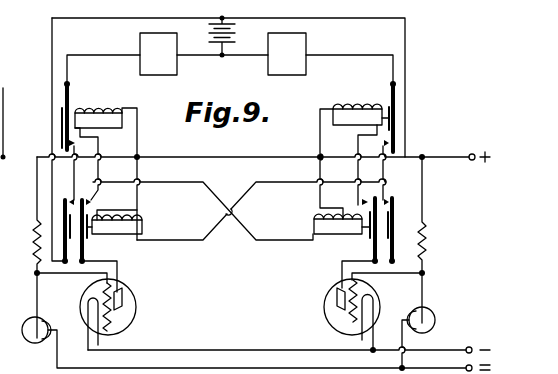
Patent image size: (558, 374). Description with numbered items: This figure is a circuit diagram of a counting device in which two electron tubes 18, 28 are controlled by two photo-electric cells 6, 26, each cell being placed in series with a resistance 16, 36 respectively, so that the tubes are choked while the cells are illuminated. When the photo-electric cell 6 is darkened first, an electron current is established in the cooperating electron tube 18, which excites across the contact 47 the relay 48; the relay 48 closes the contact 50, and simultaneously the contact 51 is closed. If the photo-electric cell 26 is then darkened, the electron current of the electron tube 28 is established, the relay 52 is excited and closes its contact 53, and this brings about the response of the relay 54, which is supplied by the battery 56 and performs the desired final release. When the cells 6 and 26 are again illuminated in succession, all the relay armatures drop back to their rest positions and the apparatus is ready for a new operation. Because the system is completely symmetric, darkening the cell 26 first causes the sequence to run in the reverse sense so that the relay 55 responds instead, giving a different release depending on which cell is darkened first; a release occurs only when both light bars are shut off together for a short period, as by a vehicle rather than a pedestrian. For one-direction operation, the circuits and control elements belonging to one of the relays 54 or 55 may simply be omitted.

The photo-electric cell 6 is at (25, 318).
The resistance 16 is at (34, 250).
The electron tube 18 is at (137, 300).
The photo-electric cell 26 is at (435, 320).
The electron tube 28 is at (324, 304).
The resistance 36 is at (427, 243).
The contact 47 is at (91, 188).
The relay 48 is at (342, 234).
The contact 50 is at (366, 203).
The contact 51 is at (396, 188).
The relay 52 is at (354, 153).
The contact 53 is at (398, 143).
The relay 54 is at (287, 54).
The relay 55 is at (158, 54).
The battery 56 is at (236, 31).